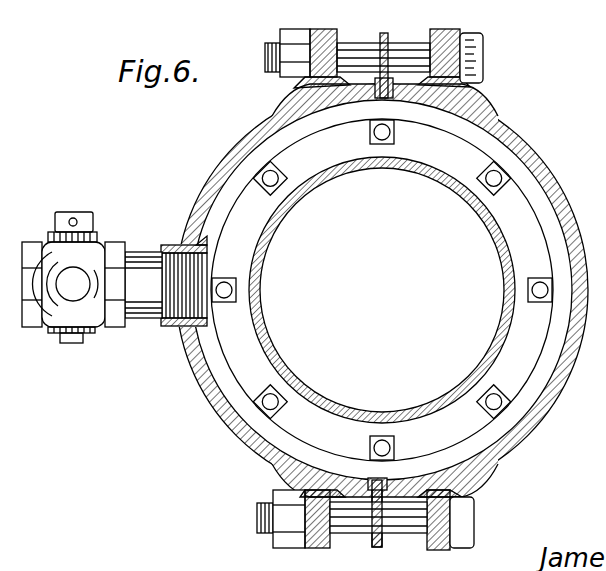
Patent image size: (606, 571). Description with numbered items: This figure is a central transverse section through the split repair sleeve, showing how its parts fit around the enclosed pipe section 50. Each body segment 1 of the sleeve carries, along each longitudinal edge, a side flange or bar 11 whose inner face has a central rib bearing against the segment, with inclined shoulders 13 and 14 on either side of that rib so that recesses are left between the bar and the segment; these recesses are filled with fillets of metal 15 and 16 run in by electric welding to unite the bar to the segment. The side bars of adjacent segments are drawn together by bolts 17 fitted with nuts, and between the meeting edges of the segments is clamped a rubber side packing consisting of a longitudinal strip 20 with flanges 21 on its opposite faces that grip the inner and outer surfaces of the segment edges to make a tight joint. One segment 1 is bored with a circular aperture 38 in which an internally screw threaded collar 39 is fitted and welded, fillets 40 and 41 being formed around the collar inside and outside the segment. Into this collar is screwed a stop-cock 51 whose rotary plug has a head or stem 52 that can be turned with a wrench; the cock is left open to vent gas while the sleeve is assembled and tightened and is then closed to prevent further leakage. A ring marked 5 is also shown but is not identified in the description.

The body segment 1 is at (382, 290).
The intermediate ring 5 is at (523, 236).
The side flange or bar 11 is at (318, 30).
The inclined shoulder 13 is at (482, 58).
The inclined shoulder 14 is at (478, 73).
The fillet of metal 15 is at (341, 72).
The fillet of metal 16 is at (307, 88).
The bolt 17 is at (266, 53).
The longitudinal strip 20 is at (383, 33).
The flange 21 is at (388, 483).
The circular aperture 38 is at (187, 337).
The internally screw threaded collar 39 is at (172, 325).
The fillet 40 is at (178, 241).
The fillet 41 is at (201, 243).
The pipe section 50 is at (140, 314).
The stop-cock 51 is at (58, 336).
The head or stem 52 is at (82, 216).